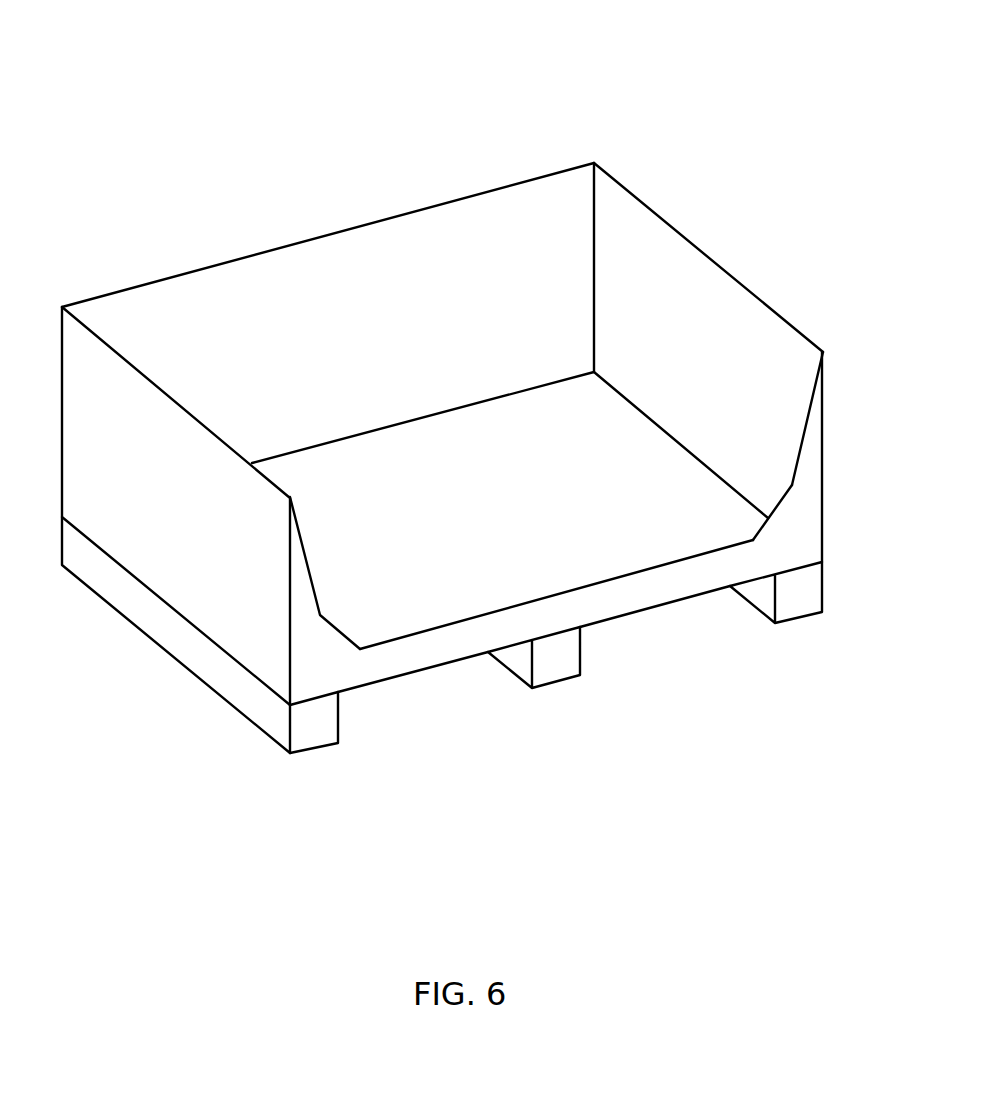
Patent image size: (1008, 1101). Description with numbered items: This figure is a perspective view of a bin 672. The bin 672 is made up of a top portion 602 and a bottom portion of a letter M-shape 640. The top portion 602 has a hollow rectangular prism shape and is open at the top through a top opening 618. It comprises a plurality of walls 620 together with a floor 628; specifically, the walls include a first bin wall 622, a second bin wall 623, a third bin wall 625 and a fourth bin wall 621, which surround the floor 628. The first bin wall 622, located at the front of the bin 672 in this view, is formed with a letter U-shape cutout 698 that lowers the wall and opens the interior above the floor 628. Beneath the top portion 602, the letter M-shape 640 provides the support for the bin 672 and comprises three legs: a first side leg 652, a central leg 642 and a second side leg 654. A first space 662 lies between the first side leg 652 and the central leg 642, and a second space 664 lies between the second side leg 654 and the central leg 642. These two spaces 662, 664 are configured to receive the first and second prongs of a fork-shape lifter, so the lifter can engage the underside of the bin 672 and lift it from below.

The bin 672 is at (52, 85).
The top portion 602 is at (112, 242).
The top opening 618 is at (452, 225).
The plurality of walls 620 is at (663, 290).
The third bin wall 625 is at (392, 345).
The second bin wall 623 is at (707, 377).
The floor 628 is at (483, 506).
The fourth bin wall 621 is at (178, 514).
The first bin wall 622 is at (797, 527).
The letter U-shape cutout 698 is at (663, 523).
The bottom portion of a letter M-shape 640 is at (308, 780).
The first side leg 652 is at (320, 725).
The central leg 642 is at (558, 667).
The second side leg 654 is at (800, 603).
The first space 662 is at (470, 722).
The second space 664 is at (715, 665).